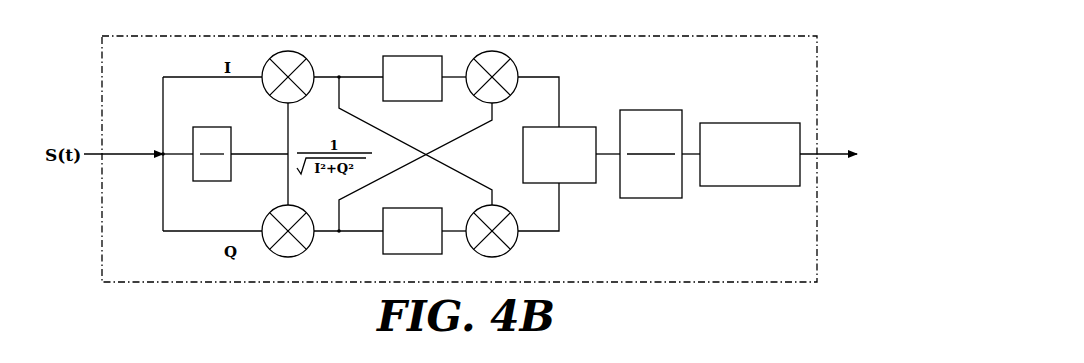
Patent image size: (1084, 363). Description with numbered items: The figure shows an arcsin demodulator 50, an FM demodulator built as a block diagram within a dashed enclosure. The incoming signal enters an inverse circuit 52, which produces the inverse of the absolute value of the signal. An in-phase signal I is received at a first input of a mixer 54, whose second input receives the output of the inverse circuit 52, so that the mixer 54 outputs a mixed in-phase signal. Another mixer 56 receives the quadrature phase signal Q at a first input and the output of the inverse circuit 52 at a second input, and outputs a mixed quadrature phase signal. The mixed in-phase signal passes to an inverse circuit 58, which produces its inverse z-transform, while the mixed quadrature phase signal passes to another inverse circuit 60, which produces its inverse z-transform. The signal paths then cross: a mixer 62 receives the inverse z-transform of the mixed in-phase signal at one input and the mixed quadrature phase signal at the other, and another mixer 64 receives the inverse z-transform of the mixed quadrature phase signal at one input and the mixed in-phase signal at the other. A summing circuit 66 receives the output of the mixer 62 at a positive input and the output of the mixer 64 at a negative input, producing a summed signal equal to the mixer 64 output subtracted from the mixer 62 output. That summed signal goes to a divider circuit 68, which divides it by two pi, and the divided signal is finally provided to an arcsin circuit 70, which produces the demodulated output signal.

The arcsin demodulator 50 is at (623, 36).
The inverse circuit 52 is at (215, 127).
The mixer 54 is at (304, 58).
The mixer 56 is at (312, 243).
The inverse circuit 58 is at (413, 56).
The inverse circuit 60 is at (413, 208).
The mixer 62 is at (508, 57).
The mixer 64 is at (515, 244).
The summing circuit 66 is at (571, 127).
The divider circuit 68 is at (652, 110).
The arcsin circuit 70 is at (750, 123).